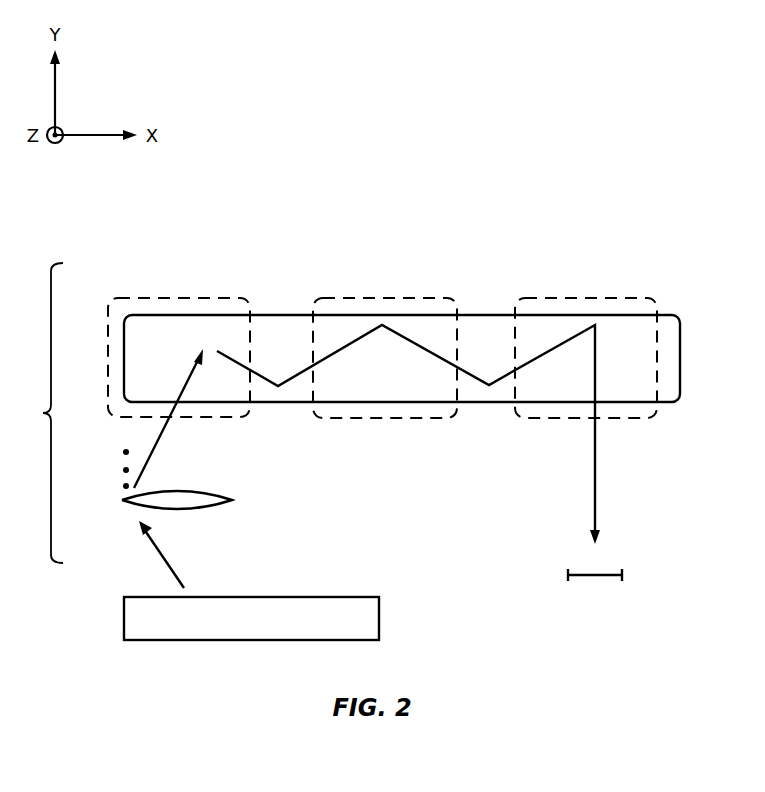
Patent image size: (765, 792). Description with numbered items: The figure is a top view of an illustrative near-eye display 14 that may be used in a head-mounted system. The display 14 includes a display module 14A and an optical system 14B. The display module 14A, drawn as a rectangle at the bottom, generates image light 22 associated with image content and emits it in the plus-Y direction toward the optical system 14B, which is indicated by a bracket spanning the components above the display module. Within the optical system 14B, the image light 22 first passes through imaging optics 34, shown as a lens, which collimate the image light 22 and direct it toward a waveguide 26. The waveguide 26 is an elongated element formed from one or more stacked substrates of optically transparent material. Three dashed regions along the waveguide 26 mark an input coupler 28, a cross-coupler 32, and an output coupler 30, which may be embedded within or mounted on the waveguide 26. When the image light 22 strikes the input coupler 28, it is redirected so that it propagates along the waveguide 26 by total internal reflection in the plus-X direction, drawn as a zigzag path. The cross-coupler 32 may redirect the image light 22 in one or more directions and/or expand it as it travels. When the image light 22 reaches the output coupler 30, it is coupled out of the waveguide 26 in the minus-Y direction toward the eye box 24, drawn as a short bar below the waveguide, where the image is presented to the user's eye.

The near-eye display 14 is at (606, 165).
The display module 14A is at (124, 613).
The optical system 14B is at (31, 413).
The image light 22 is at (165, 444).
The eye box 24 is at (600, 578).
The waveguide 26 is at (680, 358).
The input coupler 28 is at (177, 298).
The output coupler 30 is at (583, 298).
The cross-coupler 32 is at (383, 298).
The imaging optics 34 is at (252, 496).